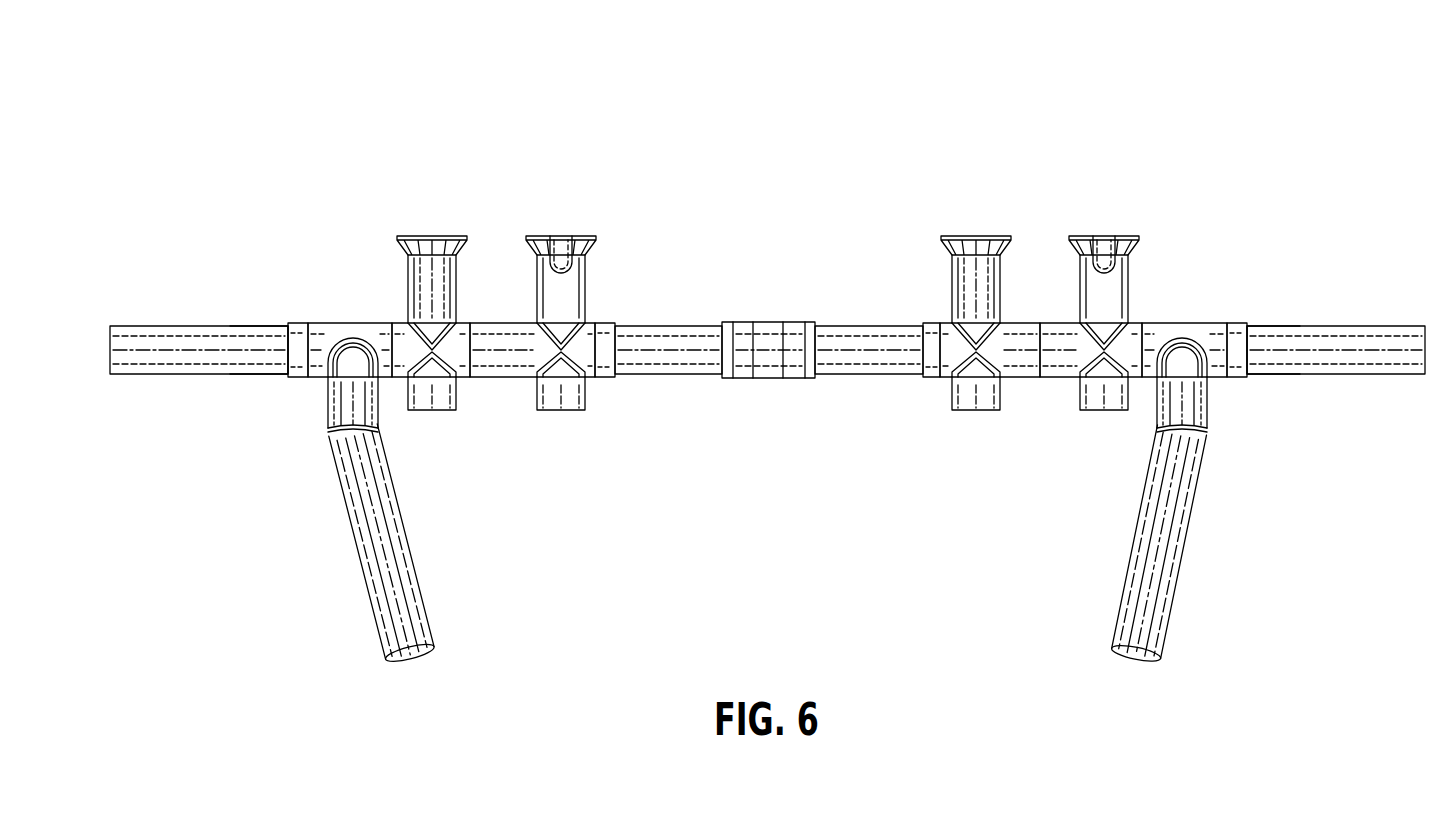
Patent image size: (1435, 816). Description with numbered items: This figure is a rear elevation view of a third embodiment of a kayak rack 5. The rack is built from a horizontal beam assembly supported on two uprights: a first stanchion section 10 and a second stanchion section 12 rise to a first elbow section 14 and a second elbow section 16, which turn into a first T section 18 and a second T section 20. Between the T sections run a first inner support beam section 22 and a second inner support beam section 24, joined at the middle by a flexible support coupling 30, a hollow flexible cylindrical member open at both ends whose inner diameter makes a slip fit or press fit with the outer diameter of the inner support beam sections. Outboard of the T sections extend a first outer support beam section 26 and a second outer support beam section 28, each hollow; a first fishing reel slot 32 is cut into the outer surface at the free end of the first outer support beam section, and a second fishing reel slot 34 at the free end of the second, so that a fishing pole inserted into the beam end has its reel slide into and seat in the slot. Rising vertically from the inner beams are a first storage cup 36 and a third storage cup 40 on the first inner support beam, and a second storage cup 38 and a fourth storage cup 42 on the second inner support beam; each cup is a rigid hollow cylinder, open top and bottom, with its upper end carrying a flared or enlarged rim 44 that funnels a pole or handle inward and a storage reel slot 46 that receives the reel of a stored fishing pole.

The kayak rack 5 is at (718, 132).
The first stanchion section 10 is at (415, 596).
The second stanchion section 12 is at (1125, 605).
The first elbow section 14 is at (380, 430).
The second elbow section 16 is at (1207, 430).
The first T section 18 is at (346, 330).
The second T section 20 is at (1189, 330).
The first inner support beam section 22 is at (499, 333).
The second inner support beam section 24 is at (871, 330).
The first outer support beam section 26 is at (262, 330).
The second outer support beam section 28 is at (1273, 333).
The flexible support coupling 30 is at (768, 322).
The first fishing reel slot 32 is at (177, 266).
The second fishing reel slot 34 is at (1352, 318).
The first storage cup 36 is at (457, 268).
The second storage cup 38 is at (1128, 275).
The third storage cup 40 is at (585, 270).
The fourth storage cup 42 is at (952, 273).
The flared or enlarged rim 44 is at (403, 240).
The storage reel slot 46 is at (567, 245).